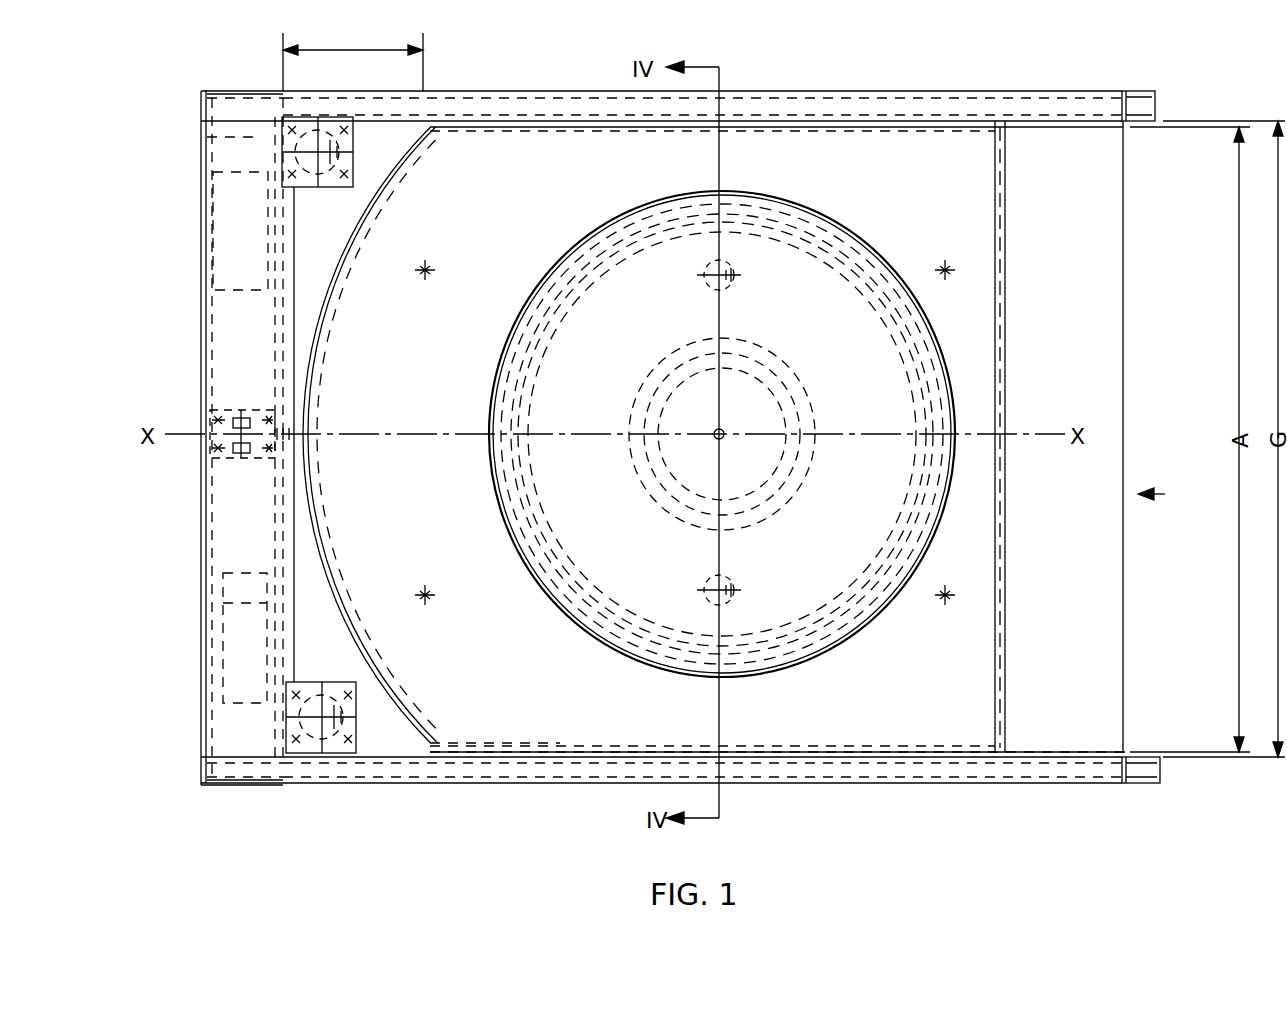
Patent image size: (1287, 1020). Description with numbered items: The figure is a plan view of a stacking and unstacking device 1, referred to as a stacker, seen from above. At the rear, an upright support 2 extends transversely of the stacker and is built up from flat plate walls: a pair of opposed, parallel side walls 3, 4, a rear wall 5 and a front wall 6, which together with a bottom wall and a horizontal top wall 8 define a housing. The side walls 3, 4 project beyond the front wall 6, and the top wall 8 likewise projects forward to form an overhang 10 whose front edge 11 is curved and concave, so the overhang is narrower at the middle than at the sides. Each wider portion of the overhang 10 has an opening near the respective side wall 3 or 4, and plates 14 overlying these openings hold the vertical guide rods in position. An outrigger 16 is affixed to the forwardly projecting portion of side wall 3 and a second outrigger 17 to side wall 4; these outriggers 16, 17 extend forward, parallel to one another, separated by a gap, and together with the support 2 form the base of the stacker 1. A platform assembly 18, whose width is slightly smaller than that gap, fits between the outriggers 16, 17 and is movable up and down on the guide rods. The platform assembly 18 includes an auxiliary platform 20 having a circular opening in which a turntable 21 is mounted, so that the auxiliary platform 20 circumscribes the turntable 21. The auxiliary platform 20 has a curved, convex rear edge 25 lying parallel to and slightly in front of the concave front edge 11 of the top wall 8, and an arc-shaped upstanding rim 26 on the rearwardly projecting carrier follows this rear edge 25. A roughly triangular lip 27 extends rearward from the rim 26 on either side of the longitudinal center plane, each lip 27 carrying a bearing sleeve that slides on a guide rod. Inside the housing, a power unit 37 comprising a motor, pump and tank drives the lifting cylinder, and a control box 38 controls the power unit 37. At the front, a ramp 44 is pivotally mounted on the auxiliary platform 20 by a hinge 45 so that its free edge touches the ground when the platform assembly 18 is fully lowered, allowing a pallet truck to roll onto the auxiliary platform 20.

The stacking and unstacking device 1 is at (1170, 805).
The upright support 2 is at (198, 793).
The side wall 3 is at (258, 780).
The side wall 4 is at (235, 90).
The rear wall 5 is at (201, 360).
The front wall 6 is at (275, 517).
The top wall 8 is at (249, 345).
The overhang 10 is at (336, 50).
The front edge of top wall 11 is at (346, 240).
The plate 14 is at (365, 137).
The outrigger 16 is at (818, 783).
The outrigger 17 is at (869, 91).
The platform assembly 18 is at (1168, 495).
The auxiliary platform 20 is at (923, 203).
The turntable 21 is at (860, 393).
The rear edge of auxiliary platform 25 is at (330, 522).
The rim 26 is at (313, 331).
The lip 27 is at (335, 300).
The power unit 37 is at (218, 634).
The control box 38 is at (210, 272).
The ramp 44 is at (1077, 359).
The hinge 45 is at (1005, 522).